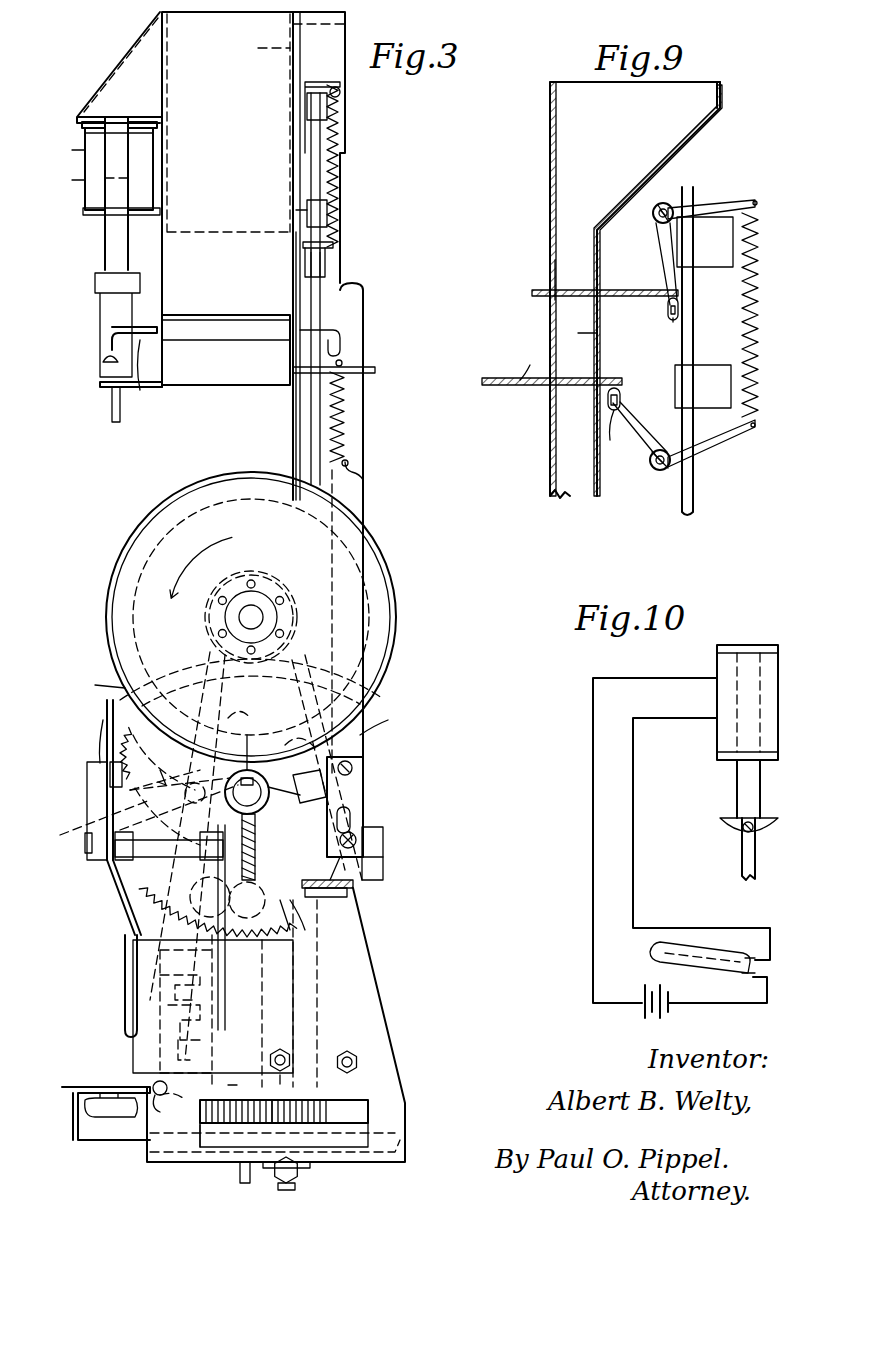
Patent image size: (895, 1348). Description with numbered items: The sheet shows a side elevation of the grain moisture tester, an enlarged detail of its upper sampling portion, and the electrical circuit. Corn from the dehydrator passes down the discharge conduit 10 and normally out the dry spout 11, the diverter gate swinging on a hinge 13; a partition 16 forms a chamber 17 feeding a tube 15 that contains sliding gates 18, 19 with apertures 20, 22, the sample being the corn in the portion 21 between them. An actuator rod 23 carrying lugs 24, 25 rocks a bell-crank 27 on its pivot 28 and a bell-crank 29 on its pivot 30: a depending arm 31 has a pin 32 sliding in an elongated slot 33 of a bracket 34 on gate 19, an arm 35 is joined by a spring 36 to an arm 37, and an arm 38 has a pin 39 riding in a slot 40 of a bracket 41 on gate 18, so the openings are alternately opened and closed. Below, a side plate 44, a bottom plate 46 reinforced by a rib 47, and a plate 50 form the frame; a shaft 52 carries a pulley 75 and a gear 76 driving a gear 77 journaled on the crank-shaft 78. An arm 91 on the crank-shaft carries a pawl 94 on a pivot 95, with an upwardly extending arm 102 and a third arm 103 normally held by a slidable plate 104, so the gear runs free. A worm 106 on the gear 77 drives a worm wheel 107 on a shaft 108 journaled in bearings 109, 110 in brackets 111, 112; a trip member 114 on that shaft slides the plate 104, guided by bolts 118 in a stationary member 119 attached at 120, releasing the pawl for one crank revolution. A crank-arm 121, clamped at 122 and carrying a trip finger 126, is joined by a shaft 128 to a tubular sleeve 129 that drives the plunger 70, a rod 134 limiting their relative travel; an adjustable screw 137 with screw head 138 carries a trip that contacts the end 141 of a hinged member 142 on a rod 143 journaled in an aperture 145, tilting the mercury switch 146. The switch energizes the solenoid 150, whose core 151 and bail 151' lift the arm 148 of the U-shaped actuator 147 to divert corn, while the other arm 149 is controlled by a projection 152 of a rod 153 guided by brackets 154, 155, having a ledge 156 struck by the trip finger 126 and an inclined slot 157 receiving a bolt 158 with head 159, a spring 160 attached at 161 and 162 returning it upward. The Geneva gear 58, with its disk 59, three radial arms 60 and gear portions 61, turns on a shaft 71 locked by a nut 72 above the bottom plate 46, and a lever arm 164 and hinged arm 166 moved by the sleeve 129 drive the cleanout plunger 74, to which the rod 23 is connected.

In FIG. 9, the discharge conduit 10 is at (549, 137).
In FIG. 3, the discharge spout 11 is at (216, 365).
In FIG. 3, the hinge 13 is at (141, 392).
In FIG. 3, the tube 15 is at (296, 420).
In FIG. 3, the partition 16 is at (264, 49).
In FIG. 3, the chamber 17 is at (333, 52).
In FIG. 9, the chamber 17 is at (692, 95).
In FIG. 3, the sliding gate 18 is at (300, 206).
In FIG. 9, the sliding gate 18 is at (492, 390).
In FIG. 3, the sliding gate 19 is at (310, 164).
In FIG. 9, the sliding gate 19 is at (532, 292).
In FIG. 9, the aperture 20 is at (519, 363).
In FIG. 9, the tube portion 21 is at (550, 333).
In FIG. 9, the aperture 22 is at (552, 280).
In FIG. 3, the actuator rod 23 is at (312, 440).
In FIG. 9, the actuator rod 23 is at (694, 493).
In FIG. 3, the lug 24 is at (307, 216).
In FIG. 9, the lug 24 is at (706, 370).
In FIG. 3, the lug 25 is at (307, 117).
In FIG. 9, the lug 25 is at (708, 268).
In FIG. 9, the bell-crank 27 is at (649, 226).
In FIG. 3, the pivot 28 is at (341, 97).
In FIG. 9, the pivot 28 is at (665, 202).
In FIG. 9, the bell-crank 29 is at (648, 474).
In FIG. 3, the pivot 30 is at (327, 264).
In FIG. 9, the pivot 30 is at (654, 470).
In FIG. 9, the depending arm 31 is at (660, 250).
In FIG. 9, the pin 32 is at (667, 310).
In FIG. 9, the elongated slot 33 is at (671, 322).
In FIG. 9, the bracket 34 is at (668, 314).
In FIG. 3, the arm 35 is at (330, 84).
In FIG. 9, the arm 35 is at (718, 198).
In FIG. 3, the spring 36 is at (338, 182).
In FIG. 9, the spring 36 is at (758, 317).
In FIG. 3, the arm 37 is at (335, 252).
In FIG. 9, the arm 37 is at (728, 437).
In FIG. 9, the arm 38 is at (636, 423).
In FIG. 9, the pin 39 is at (620, 402).
In FIG. 9, the slot 40 is at (622, 385).
In FIG. 9, the bracket 41 is at (611, 430).
In FIG. 3, the side plate member 44 is at (368, 1000).
In FIG. 3, the bottom member 46 is at (410, 1133).
In FIG. 3, the rib 47 is at (238, 1172).
In FIG. 3, the plate 50 is at (355, 890).
In FIG. 3, the shaft 52 is at (255, 612).
In FIG. 3, the Geneva gear 58 is at (330, 1108).
In FIG. 3, the disk member 59 is at (310, 1140).
In FIG. 3, the radial arms 60 is at (208, 1142).
In FIG. 3, the gear portions 61 is at (278, 1110).
In FIG. 3, the plunger member 70 is at (223, 1085).
In FIG. 3, the shaft 71 is at (290, 1195).
In FIG. 3, the nut 72 is at (302, 1178).
In FIG. 3, the cleanout plunger 74 is at (325, 1095).
In FIG. 3, the pulley 75 is at (395, 574).
In FIG. 3, the gear 76 is at (205, 628).
In FIG. 3, the gear 77 is at (248, 856).
In FIG. 3, the crank-shaft 78 is at (247, 763).
In FIG. 3, the arm 91 is at (185, 825).
In FIG. 3, the pawl member 94 is at (180, 802).
In FIG. 3, the pivot 95 is at (185, 815).
In FIG. 3, the upwardly extending arm 102 is at (229, 716).
In FIG. 3, the third arm 103 is at (157, 759).
In FIG. 3, the slidable plate 104 is at (105, 750).
In FIG. 3, the worm 106 is at (309, 798).
In FIG. 3, the worm wheel 107 is at (242, 864).
In FIG. 3, the shaft 108 is at (200, 858).
In FIG. 3, the bearing 109 is at (122, 862).
In FIG. 3, the bearing 110 is at (200, 858).
In FIG. 3, the supporting bracket 111 is at (125, 890).
In FIG. 3, the supporting bracket 112 is at (205, 897).
In FIG. 3, the trip member 114 is at (85, 840).
In FIG. 3, the bolts 118 is at (95, 765).
In FIG. 3, the stationary member 119 is at (104, 735).
In FIG. 3, the attachment point 120 is at (98, 810).
In FIG. 3, the crank-arm 121 is at (296, 815).
In FIG. 3, the clamp 122 is at (298, 740).
In FIG. 3, the trip finger 126 is at (355, 780).
In FIG. 3, the shaft 128 is at (316, 915).
In FIG. 3, the tubular sleeve 129 is at (300, 975).
In FIG. 3, the rod 134 is at (196, 1055).
In FIG. 3, the adjustable threaded screw 137 is at (126, 1013).
In FIG. 3, the screw head 138 is at (126, 995).
In FIG. 3, the end 141 is at (182, 1085).
In FIG. 3, the hinged member 142 is at (88, 1085).
In FIG. 3, the rod 143 is at (152, 1084).
In FIG. 3, the aperture 145 is at (170, 1108).
In FIG. 3, the mercury switch 146 is at (105, 1112).
In FIG. 10, the mercury switch 146 is at (662, 950).
In FIG. 3, the U-shaped member 147 is at (137, 318).
In FIG. 3, the arm 148 is at (100, 350).
In FIG. 3, the arm 149 is at (342, 345).
In FIG. 3, the solenoid 150 is at (87, 143).
In FIG. 10, the solenoid 150 is at (780, 707).
In FIG. 3, the core 151 is at (84, 193).
In FIG. 10, the core 151 is at (759, 796).
In FIG. 3, the bail 151' is at (98, 334).
In FIG. 10, the bail 151' is at (713, 849).
In FIG. 3, the projection 152 is at (366, 295).
In FIG. 3, the vertically reciprocable rod 153 is at (366, 462).
In FIG. 3, the bracket 154 is at (376, 371).
In FIG. 3, the bracket 155 is at (384, 828).
In FIG. 3, the ledge-like projection 156 is at (355, 795).
In FIG. 3, the elongated inclined slot 157 is at (350, 815).
In FIG. 3, the bolt 158 is at (370, 860).
In FIG. 3, the enlarged head portion 159 is at (356, 850).
In FIG. 3, the spring 160 is at (345, 401).
In FIG. 3, the attachment point 161 is at (350, 468).
In FIG. 3, the attachment point 162 is at (342, 360).
In FIG. 3, the lever arm 164 is at (175, 955).
In FIG. 3, the hinged arm 166 is at (124, 972).